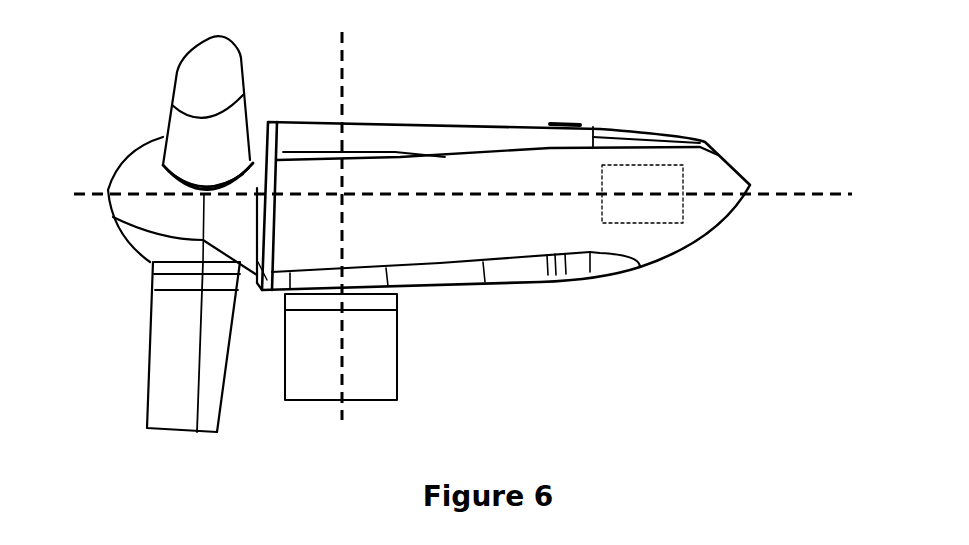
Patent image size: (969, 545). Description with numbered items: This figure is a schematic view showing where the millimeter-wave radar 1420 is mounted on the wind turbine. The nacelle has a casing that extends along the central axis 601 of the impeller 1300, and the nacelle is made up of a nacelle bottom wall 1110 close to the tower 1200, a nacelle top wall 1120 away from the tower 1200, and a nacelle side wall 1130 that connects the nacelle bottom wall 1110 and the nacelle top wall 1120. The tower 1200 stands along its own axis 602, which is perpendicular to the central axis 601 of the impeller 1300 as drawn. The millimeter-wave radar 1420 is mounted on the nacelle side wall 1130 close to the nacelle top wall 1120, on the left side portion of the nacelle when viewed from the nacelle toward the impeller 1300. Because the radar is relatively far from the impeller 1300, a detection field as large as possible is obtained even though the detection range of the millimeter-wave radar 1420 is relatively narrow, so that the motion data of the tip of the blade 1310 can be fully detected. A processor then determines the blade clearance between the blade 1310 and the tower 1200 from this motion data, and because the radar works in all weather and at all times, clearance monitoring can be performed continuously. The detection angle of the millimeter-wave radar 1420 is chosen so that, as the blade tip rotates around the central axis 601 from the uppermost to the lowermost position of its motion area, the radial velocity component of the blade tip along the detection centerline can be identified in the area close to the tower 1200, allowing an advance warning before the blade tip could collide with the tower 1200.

The central axis 601 is at (828, 188).
The axis of the tower 602 is at (350, 65).
The nacelle bottom wall 1110 is at (475, 282).
The nacelle top wall 1120 is at (432, 120).
The nacelle side wall 1130 is at (508, 205).
The tower 1200 is at (362, 382).
The impeller 1300 is at (125, 155).
The blade 1310 is at (170, 347).
The millimeter-wave radar 1420 is at (665, 215).